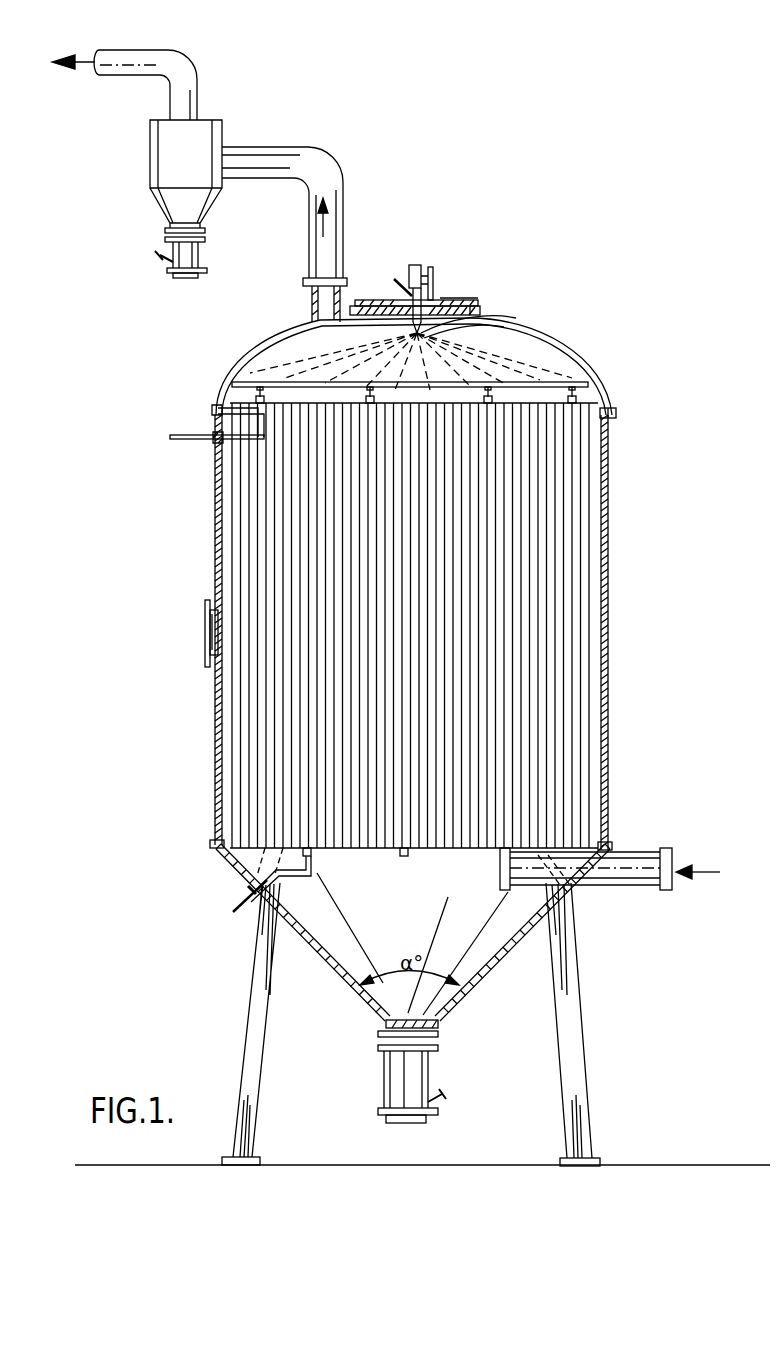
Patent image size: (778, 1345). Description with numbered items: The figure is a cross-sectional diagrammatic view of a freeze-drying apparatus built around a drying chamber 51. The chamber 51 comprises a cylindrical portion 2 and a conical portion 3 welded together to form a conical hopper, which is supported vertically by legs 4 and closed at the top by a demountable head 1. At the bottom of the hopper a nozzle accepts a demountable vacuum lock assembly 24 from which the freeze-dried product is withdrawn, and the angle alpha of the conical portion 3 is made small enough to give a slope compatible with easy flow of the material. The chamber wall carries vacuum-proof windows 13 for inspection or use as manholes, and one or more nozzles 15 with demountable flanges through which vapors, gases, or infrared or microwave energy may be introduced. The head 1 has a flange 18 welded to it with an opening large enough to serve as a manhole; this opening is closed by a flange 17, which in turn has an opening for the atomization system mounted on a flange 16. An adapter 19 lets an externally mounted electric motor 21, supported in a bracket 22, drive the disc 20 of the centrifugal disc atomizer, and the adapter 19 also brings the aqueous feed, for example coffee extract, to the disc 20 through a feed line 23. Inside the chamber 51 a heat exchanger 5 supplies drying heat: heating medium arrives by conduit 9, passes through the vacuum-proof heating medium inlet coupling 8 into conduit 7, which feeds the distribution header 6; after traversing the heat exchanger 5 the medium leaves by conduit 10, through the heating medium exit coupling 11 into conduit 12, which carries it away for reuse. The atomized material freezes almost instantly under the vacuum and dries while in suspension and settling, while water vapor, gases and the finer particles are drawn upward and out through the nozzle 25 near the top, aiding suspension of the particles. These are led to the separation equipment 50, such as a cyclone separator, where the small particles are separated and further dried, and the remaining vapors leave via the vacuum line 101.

The demountable head 1 is at (250, 357).
The cylindrical portion 2 is at (213, 780).
The conical portion 3 is at (312, 945).
The legs 4 is at (248, 1020).
The heat exchanger 5 is at (406, 858).
The distribution header 6 is at (562, 378).
The conduit 7 is at (264, 428).
The heating medium inlet coupling 8 is at (216, 438).
The conduit 9 is at (170, 434).
The conduit 10 is at (314, 861).
The heating medium exit coupling 11 is at (250, 890).
The conduit 12 is at (240, 908).
The vacuum-proof windows 13 is at (208, 637).
The nozzles 15 is at (630, 878).
The flange 16 is at (461, 300).
The flange 17 is at (474, 306).
The flange 18 is at (368, 300).
The adapter 19 is at (436, 326).
The disc 20 is at (455, 330).
The electric motor 21 is at (415, 265).
The bracket 22 is at (432, 267).
The feed line 23 is at (398, 271).
The demountable vacuum lock assembly 24 is at (428, 1082).
The nozzle 25 is at (307, 314).
The separation equipment 50 is at (193, 166).
The drying chamber 51 is at (612, 570).
The vacuum line 101 is at (135, 50).